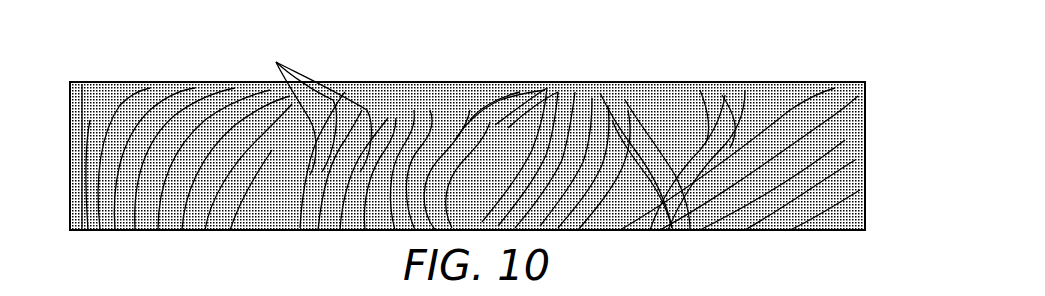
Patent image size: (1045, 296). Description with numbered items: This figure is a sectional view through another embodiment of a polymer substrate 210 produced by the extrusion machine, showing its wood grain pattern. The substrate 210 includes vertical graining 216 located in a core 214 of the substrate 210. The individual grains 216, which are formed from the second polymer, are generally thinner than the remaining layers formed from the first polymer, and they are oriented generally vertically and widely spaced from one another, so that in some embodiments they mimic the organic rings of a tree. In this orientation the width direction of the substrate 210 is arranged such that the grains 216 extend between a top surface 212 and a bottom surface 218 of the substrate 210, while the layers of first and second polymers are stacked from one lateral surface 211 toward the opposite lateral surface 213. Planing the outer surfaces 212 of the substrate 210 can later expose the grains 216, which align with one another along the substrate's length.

The polymer substrate 210 is at (766, 64).
The lateral surface 211 is at (70, 117).
The top surface 212 is at (530, 82).
The lateral surface 213 is at (866, 147).
The core 214 is at (616, 118).
The vertical graining 216 is at (312, 103).
The bottom surface 218 is at (680, 232).